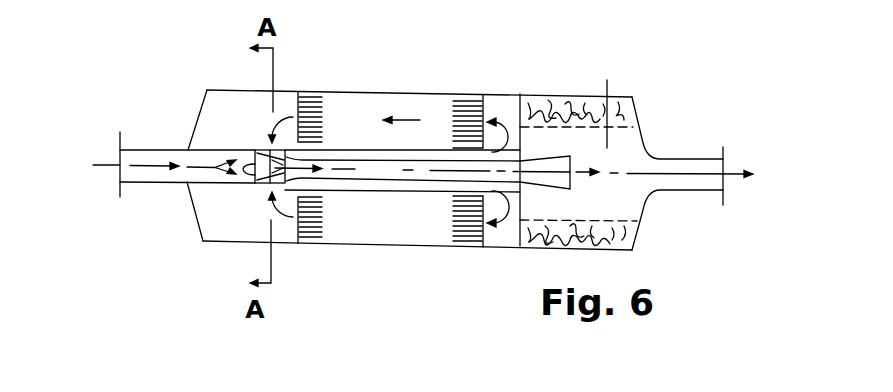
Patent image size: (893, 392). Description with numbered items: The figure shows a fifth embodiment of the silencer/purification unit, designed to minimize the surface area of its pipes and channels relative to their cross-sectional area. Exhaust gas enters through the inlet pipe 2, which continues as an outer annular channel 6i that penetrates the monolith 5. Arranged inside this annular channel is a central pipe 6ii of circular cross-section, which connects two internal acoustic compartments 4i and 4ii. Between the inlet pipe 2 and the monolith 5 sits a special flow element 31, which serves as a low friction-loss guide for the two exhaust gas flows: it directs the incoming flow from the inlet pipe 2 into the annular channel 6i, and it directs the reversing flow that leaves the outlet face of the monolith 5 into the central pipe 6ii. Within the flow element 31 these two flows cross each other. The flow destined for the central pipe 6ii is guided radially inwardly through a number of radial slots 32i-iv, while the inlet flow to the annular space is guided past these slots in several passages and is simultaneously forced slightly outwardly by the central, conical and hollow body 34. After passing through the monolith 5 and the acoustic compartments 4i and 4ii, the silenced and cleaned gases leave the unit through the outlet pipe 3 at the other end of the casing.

The inlet pipe 2 is at (150, 147).
The outlet pipe 3 is at (685, 158).
The flow element 31 is at (270, 148).
The central, conical and hollow body 34 is at (257, 171).
The radial slots 32i-iv is at (262, 181).
The annular channel 6i is at (357, 150).
The central pipe 6ii is at (424, 166).
The monolith 5 is at (514, 200).
The internal acoustic compartment 4i is at (503, 231).
The internal acoustic compartment 4ii is at (568, 110).